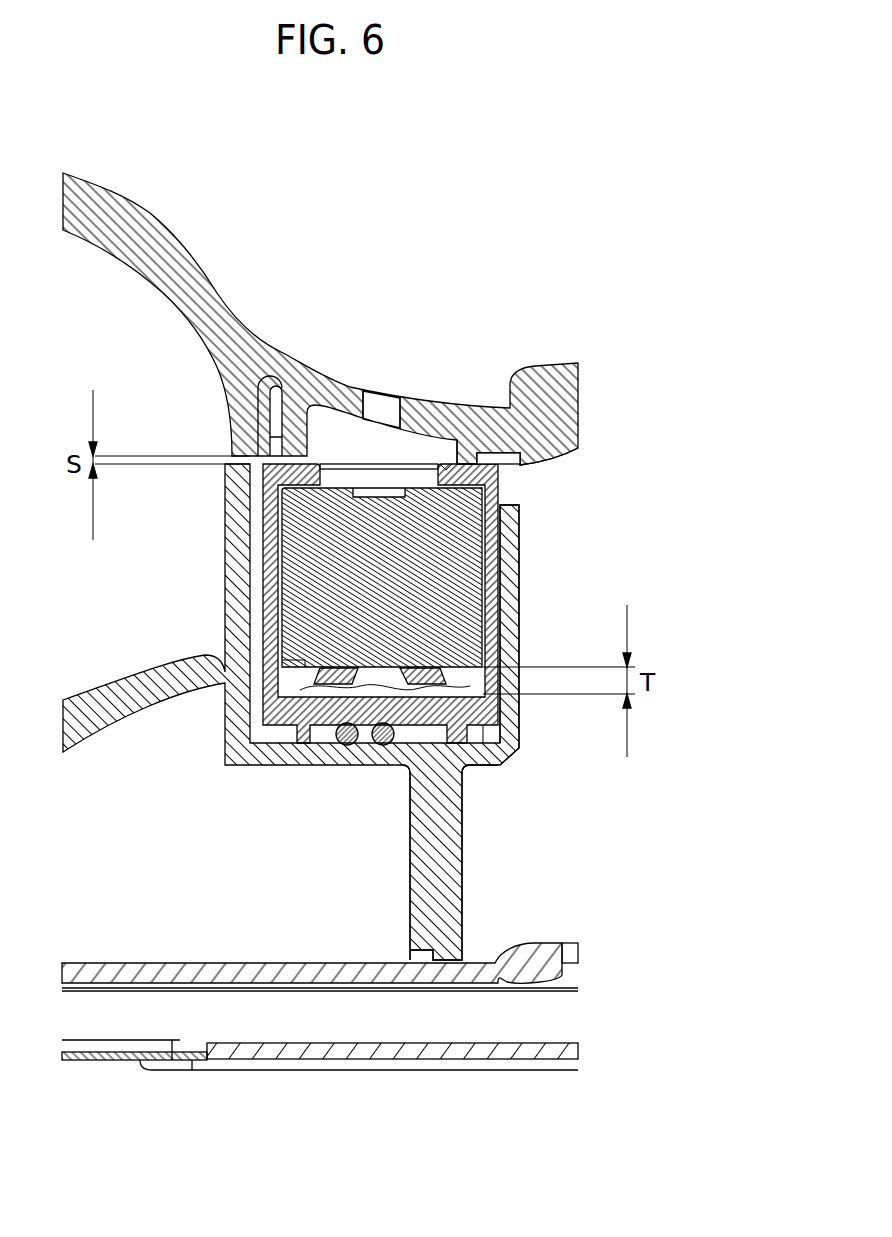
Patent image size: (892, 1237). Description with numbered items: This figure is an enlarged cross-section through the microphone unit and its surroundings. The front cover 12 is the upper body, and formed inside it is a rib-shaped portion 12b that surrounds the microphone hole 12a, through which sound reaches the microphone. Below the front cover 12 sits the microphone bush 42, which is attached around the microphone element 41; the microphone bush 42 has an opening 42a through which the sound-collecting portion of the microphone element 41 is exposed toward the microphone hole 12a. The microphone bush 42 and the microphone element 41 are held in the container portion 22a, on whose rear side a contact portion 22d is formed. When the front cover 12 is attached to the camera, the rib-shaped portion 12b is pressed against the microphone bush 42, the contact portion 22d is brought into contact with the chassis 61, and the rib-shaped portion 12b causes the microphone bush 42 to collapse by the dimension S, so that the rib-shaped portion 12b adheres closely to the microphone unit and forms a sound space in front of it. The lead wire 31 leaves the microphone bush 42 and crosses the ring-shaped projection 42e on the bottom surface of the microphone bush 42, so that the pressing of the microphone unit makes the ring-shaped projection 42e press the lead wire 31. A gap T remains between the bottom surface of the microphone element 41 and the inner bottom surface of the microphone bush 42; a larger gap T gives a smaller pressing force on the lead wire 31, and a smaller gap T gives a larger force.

The front cover 12 is at (203, 290).
The microphone hole 12a is at (382, 405).
The rib-shaped portion 12b is at (295, 427).
The container portion 22a is at (517, 583).
The contact portion 22d is at (440, 908).
The microphone bush 42 is at (503, 497).
The opening 42a is at (428, 462).
The ring-shaped projection 42e is at (460, 767).
The microphone element 41 is at (437, 558).
The lead wire 31 is at (341, 744).
The chassis 61 is at (147, 978).